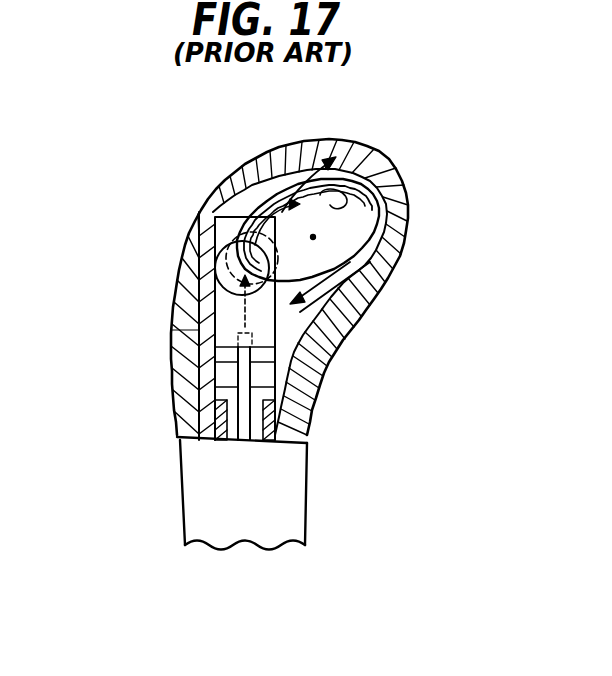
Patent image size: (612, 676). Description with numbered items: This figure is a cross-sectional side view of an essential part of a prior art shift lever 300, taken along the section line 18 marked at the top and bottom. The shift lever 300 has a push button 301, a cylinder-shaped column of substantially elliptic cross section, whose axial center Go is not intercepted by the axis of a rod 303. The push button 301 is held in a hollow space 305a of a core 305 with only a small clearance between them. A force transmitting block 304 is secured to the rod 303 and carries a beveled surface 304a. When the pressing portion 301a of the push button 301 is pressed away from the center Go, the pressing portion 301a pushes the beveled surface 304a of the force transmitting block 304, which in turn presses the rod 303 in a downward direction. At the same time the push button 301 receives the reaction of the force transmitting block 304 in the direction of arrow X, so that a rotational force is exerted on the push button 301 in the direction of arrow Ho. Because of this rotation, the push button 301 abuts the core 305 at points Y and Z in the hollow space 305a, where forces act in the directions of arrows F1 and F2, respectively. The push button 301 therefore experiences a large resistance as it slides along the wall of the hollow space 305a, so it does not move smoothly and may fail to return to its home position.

The shift lever 300 is at (172, 514).
The push button 301 is at (353, 243).
The pressing portion 301a is at (208, 217).
The rod 303 is at (178, 370).
The force transmitting block 304 is at (187, 310).
The beveled surface 304a is at (195, 270).
The core 305 is at (330, 360).
The hollow space 305a is at (360, 183).
The section line 18- 18 is at (247, 160).
The arrow X is at (251, 302).
The point Y is at (262, 213).
The point Z is at (370, 300).
The arrow F1 is at (335, 164).
The arrow F2 is at (314, 298).
The axial center Go is at (313, 237).
The arrow Ho is at (279, 223).